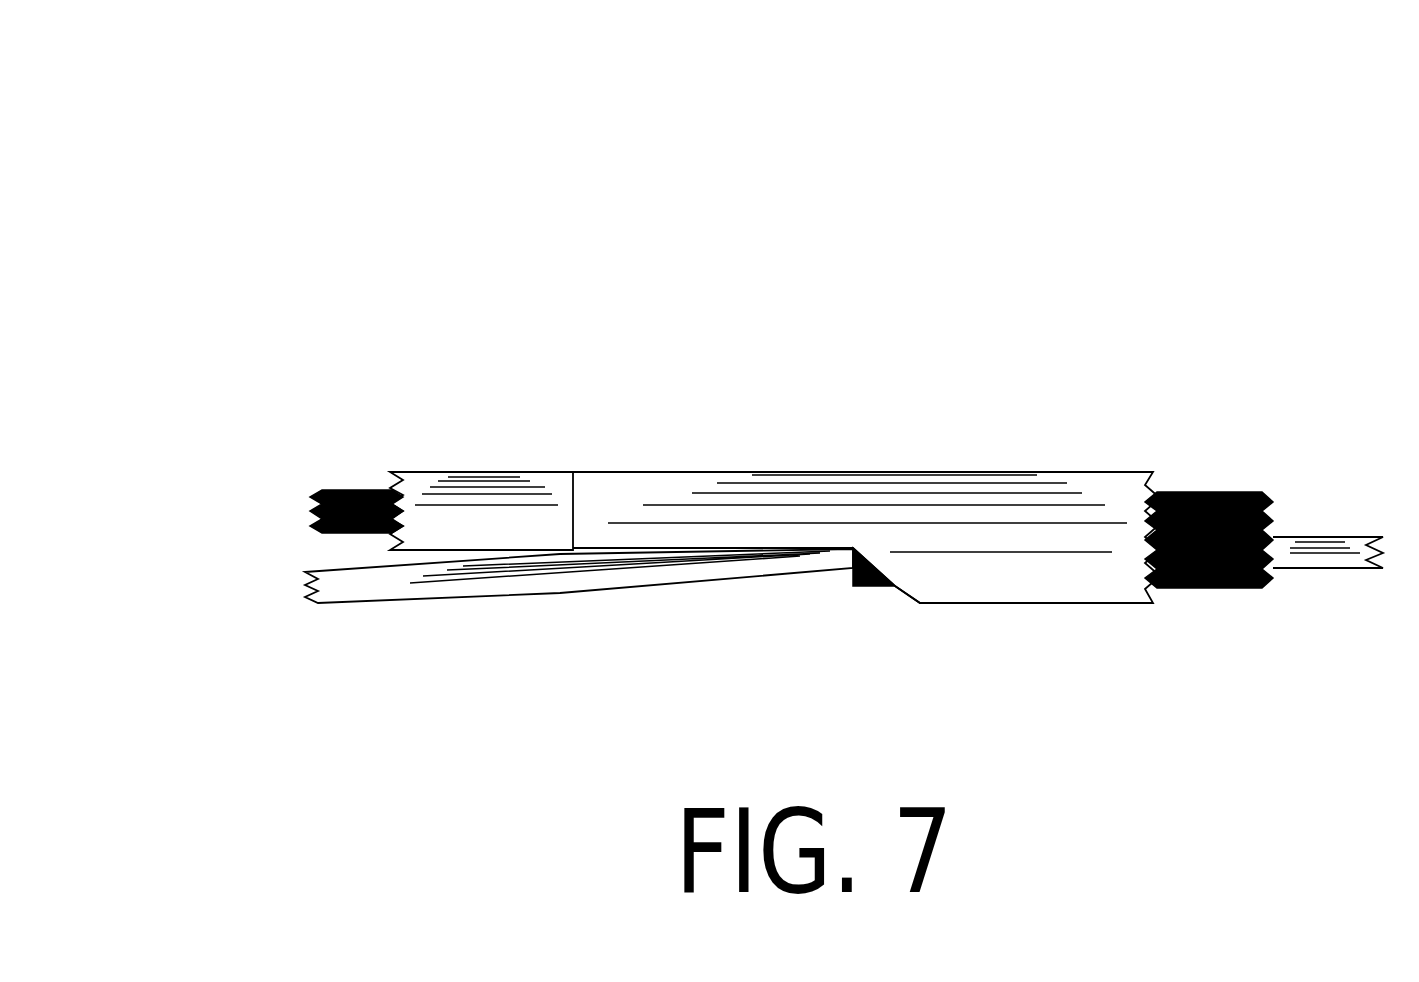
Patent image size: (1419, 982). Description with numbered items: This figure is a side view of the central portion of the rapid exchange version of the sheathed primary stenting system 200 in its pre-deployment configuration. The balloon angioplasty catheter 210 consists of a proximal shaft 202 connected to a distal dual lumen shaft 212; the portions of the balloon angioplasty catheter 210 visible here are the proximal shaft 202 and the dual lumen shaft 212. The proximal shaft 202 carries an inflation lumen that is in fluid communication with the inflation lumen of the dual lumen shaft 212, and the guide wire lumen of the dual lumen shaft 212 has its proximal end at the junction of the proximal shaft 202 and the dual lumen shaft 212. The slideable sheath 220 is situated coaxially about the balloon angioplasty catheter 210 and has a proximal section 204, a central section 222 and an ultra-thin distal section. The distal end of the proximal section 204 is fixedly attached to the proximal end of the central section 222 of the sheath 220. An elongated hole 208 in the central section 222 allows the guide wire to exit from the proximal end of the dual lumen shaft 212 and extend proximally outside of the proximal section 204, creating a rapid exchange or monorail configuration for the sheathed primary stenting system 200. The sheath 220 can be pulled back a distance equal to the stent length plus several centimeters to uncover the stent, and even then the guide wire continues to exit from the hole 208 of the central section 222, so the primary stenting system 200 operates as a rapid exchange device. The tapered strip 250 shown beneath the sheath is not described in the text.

The sheathed primary stenting system 200 is at (768, 265).
The proximal shaft 202 is at (350, 490).
The proximal section 204 is at (475, 470).
The elongated hole 208 is at (915, 597).
The balloon angioplasty catheter 210 is at (1271, 613).
The dual lumen shaft 212 is at (1213, 493).
The slideable sheath 220 is at (590, 453).
The central section 222 is at (1003, 470).
The tapered strip 250 is at (518, 593).